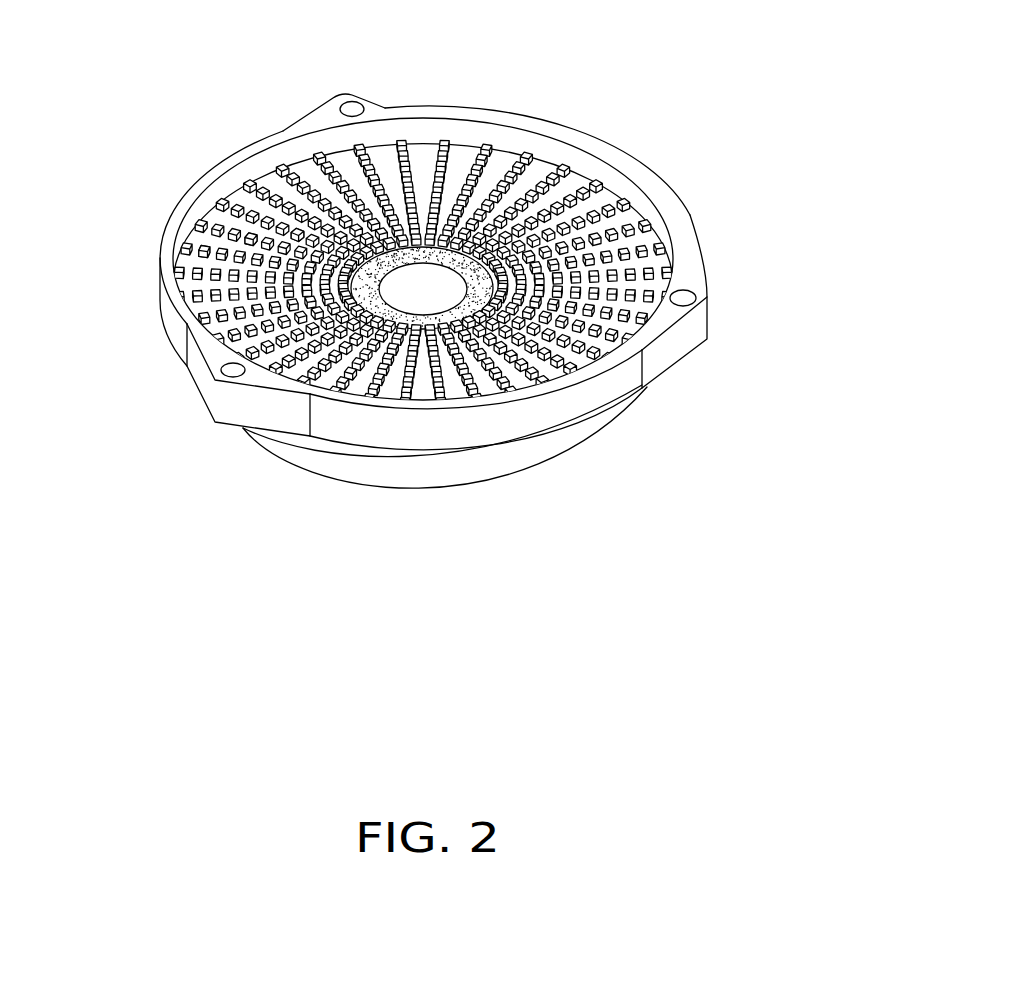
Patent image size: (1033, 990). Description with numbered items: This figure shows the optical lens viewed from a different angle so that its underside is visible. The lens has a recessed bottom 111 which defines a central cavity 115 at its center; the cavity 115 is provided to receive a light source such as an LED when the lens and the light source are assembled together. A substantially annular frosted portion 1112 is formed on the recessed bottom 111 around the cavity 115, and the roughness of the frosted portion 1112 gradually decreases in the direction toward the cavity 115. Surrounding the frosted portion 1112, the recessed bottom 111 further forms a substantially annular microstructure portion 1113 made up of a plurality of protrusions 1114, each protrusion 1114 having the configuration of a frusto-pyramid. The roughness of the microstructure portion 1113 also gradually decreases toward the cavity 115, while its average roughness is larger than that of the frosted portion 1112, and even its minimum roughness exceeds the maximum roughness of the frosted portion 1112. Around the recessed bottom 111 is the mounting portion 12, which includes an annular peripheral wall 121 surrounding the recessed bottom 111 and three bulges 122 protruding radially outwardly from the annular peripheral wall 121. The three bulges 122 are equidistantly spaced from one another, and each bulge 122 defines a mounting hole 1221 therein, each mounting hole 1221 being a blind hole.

The mounting portion 12 is at (485, 272).
The annular peripheral wall 121 is at (587, 148).
The bulge 122 is at (677, 262).
The mounting hole 1221 is at (685, 302).
The recessed bottom 111 is at (366, 237).
The frosted portion 1112 is at (303, 237).
The microstructure portion 1113 is at (250, 233).
The protrusion 1114 is at (200, 253).
The central cavity 115 is at (423, 283).